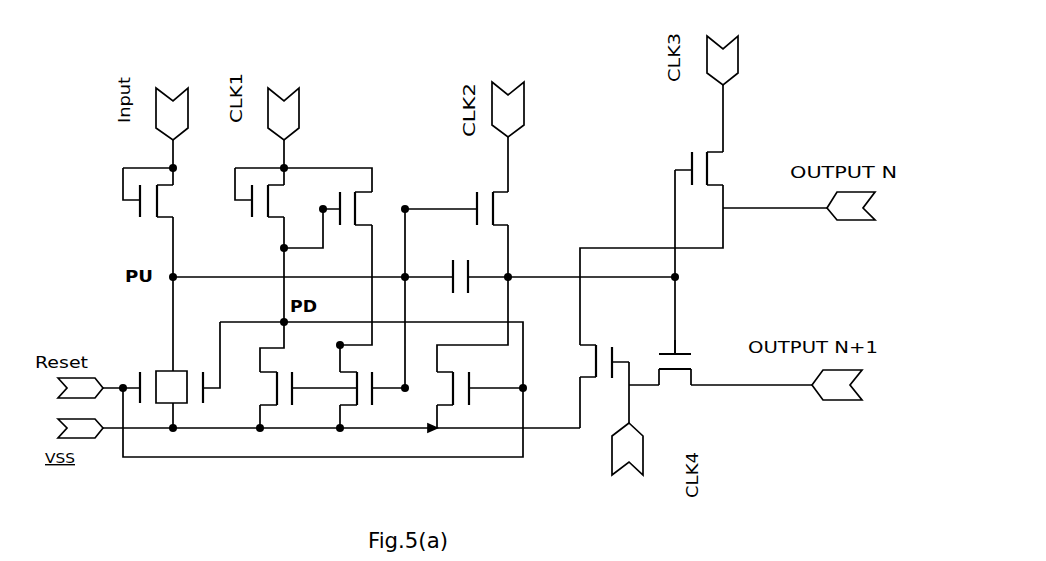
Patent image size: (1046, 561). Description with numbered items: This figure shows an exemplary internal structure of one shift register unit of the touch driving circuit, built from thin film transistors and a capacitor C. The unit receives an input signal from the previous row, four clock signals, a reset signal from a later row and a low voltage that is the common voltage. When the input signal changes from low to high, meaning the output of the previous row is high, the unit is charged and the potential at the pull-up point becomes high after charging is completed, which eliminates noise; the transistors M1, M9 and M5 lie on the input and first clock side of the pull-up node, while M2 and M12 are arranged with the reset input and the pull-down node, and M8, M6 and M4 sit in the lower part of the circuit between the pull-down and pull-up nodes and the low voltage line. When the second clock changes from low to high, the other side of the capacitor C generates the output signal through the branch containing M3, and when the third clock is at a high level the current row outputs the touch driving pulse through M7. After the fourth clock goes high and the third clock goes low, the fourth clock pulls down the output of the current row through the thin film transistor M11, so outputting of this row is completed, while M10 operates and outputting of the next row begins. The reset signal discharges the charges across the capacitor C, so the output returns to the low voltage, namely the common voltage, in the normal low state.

The first transistor M1 is at (120, 192).
The second transistor M2 is at (155, 374).
The third transistor M3 is at (456, 201).
The fourth transistor M4 is at (480, 397).
The fifth transistor M5 is at (347, 226).
The sixth transistor M6 is at (372, 379).
The seventh transistor M7 is at (715, 144).
The eighth transistor M8 is at (297, 367).
The ninth transistor M9 is at (252, 210).
The thin film transistor M10 is at (688, 353).
The thin film transistor M11 is at (604, 349).
The twelfth transistor M12 is at (200, 374).
The capacitor C is at (456, 262).